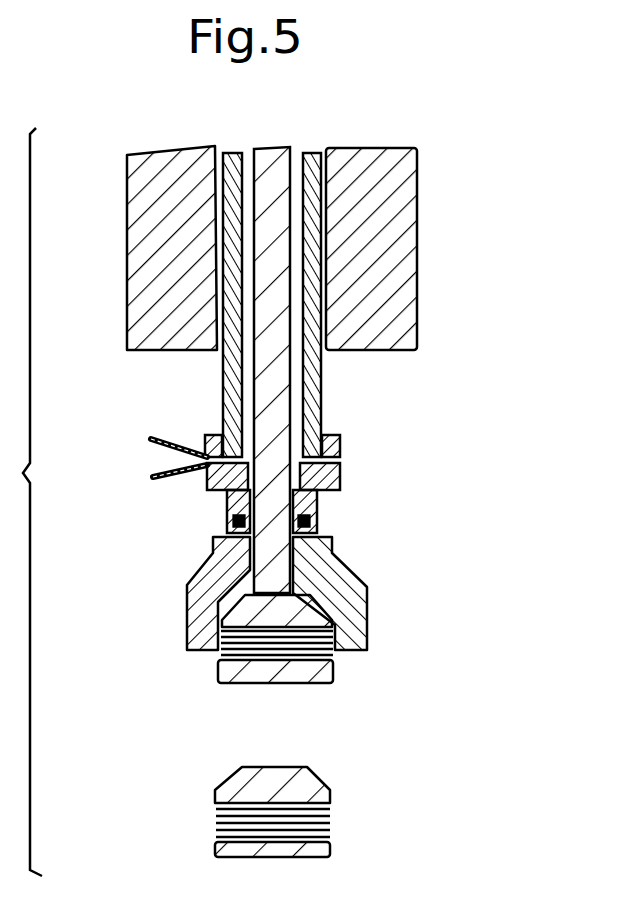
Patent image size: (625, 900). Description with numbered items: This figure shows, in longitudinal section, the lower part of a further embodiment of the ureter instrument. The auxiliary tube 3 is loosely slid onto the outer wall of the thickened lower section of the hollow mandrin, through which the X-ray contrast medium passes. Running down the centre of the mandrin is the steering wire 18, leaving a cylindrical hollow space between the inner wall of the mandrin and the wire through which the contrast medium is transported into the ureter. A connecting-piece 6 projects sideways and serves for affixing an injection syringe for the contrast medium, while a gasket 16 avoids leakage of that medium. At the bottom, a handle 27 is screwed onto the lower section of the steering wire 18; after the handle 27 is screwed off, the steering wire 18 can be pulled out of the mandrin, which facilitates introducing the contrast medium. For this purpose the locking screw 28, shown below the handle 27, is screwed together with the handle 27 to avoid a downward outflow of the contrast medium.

The auxiliary tube 3 is at (137, 215).
The steering wire 18 is at (283, 370).
The gasket 16 is at (322, 511).
The connecting-piece 6 is at (157, 478).
The handle 27 is at (357, 624).
The locking screw 28 is at (215, 838).